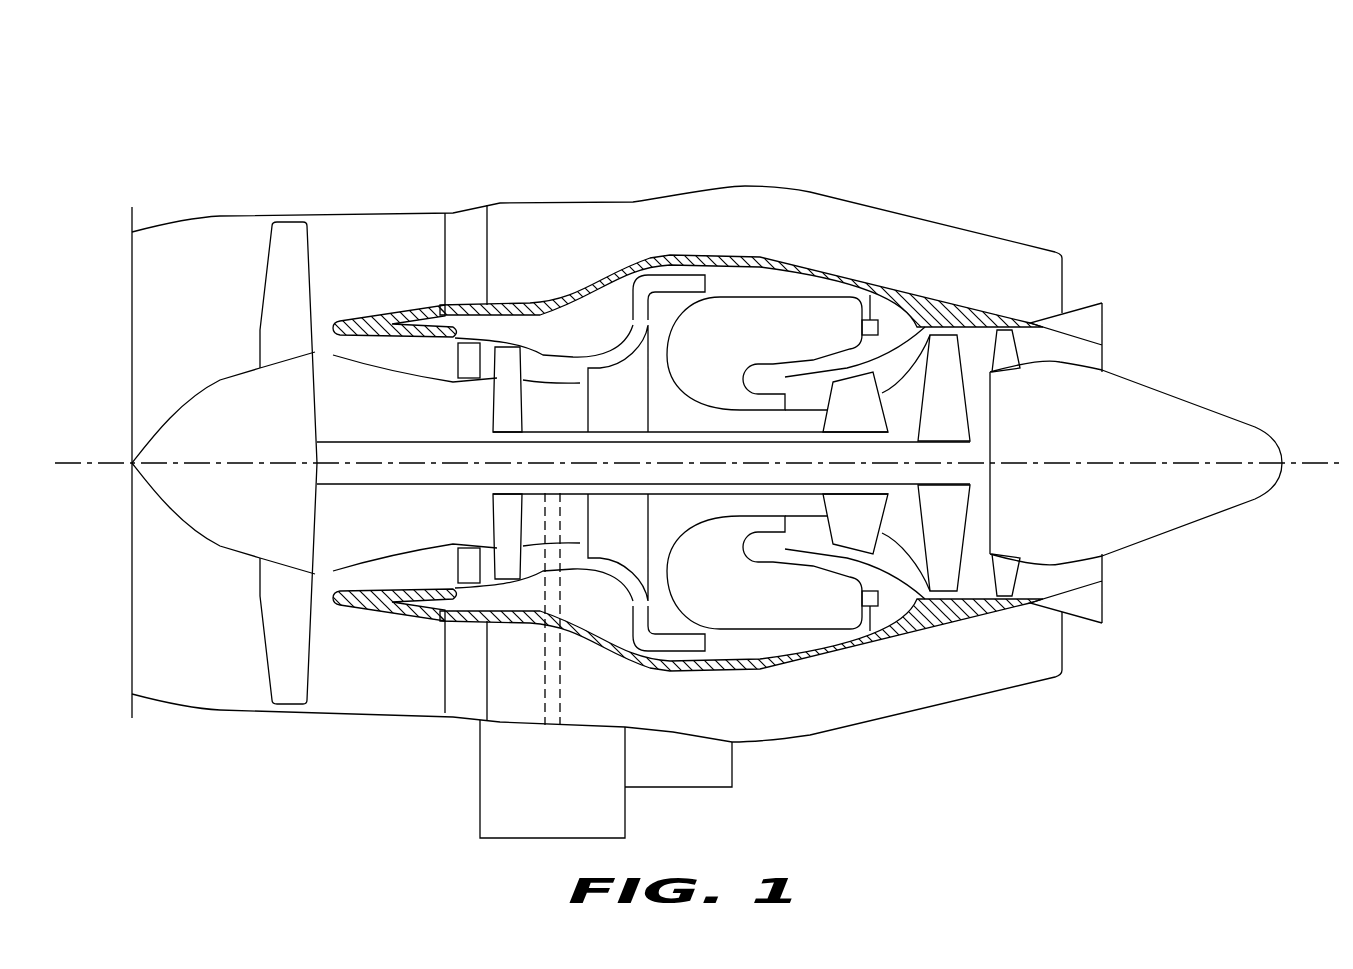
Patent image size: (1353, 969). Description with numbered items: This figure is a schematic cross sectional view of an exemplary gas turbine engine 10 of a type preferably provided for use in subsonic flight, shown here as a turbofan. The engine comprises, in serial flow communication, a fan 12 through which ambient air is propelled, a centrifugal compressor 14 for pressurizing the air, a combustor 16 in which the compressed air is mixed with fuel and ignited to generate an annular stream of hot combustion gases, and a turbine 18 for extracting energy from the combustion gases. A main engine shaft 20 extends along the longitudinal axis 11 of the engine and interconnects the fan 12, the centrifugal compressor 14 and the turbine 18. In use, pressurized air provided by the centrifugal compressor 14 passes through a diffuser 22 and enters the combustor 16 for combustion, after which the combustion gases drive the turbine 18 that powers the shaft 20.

The gas turbine engine 10 is at (942, 156).
The longitudinal axis 11 is at (1320, 463).
The fan 12 is at (281, 620).
The centrifugal compressor 14 is at (542, 360).
The combustor 16 is at (767, 320).
The turbine 18 is at (902, 532).
The main engine shaft 20 is at (395, 473).
The diffuser 22 is at (667, 285).